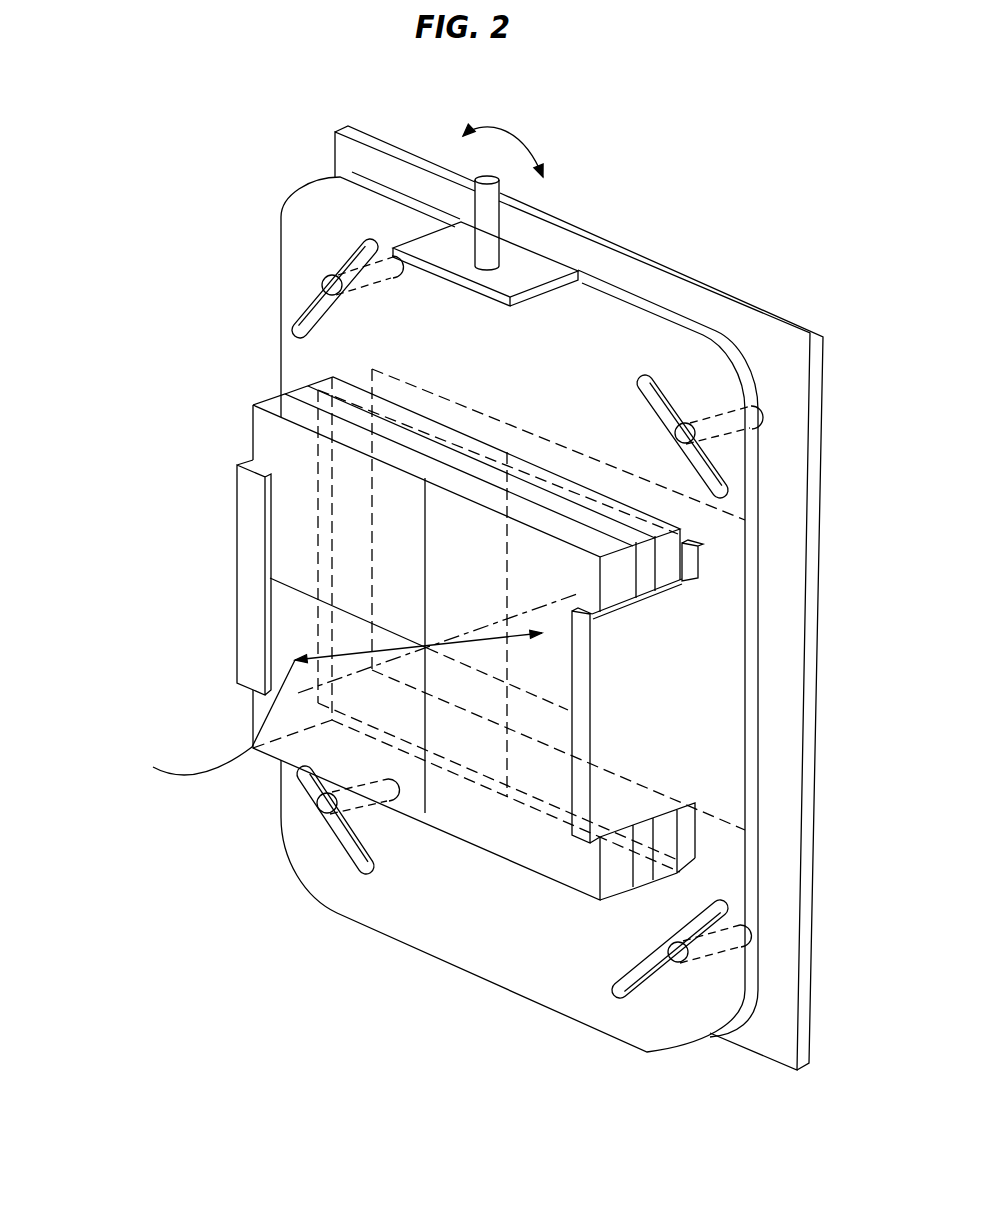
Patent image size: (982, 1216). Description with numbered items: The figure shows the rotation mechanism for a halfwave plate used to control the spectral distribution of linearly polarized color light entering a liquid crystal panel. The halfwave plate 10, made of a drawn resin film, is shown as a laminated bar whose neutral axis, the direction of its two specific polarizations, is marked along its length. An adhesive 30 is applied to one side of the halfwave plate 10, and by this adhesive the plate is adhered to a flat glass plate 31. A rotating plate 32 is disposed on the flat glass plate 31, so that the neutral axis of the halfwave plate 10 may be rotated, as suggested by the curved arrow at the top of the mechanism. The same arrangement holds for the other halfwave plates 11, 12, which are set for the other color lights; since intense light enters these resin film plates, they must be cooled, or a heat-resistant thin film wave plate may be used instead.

The halfwave plate 10 is at (388, 602).
The halfwave plate 11 is at (444, 647).
The halfwave plate 12 is at (277, 403).
The adhesive 30 is at (660, 583).
The flat glass plate 31 is at (668, 553).
The rotating plate 32 is at (703, 337).